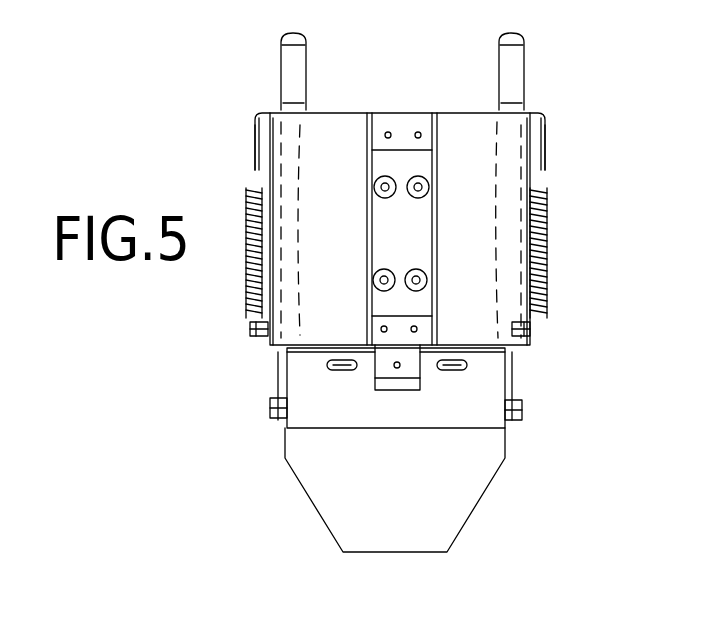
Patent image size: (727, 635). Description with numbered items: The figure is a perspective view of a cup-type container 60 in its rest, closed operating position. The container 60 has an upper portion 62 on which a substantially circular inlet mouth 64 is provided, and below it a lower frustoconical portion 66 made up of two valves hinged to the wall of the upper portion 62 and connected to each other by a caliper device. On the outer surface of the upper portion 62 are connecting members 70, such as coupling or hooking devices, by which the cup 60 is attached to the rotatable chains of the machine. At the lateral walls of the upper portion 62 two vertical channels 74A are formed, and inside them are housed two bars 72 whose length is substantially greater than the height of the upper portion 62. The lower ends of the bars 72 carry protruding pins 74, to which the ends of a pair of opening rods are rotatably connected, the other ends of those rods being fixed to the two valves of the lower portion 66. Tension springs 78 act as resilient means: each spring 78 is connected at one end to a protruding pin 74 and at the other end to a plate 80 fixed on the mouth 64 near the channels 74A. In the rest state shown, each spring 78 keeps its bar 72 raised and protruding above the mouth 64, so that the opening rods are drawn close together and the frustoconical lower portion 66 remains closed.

The cup-type container 60 is at (242, 407).
The upper portion 62 is at (512, 328).
The inlet mouth 64 is at (437, 30).
The lower frustoconical portion 66 is at (444, 510).
The connecting members 70 is at (268, 341).
The bars 72 is at (292, 76).
The protruding pins 74 is at (513, 425).
The vertical channels 74A is at (312, 165).
The tension springs 78 is at (600, 205).
The plate 80 is at (257, 152).